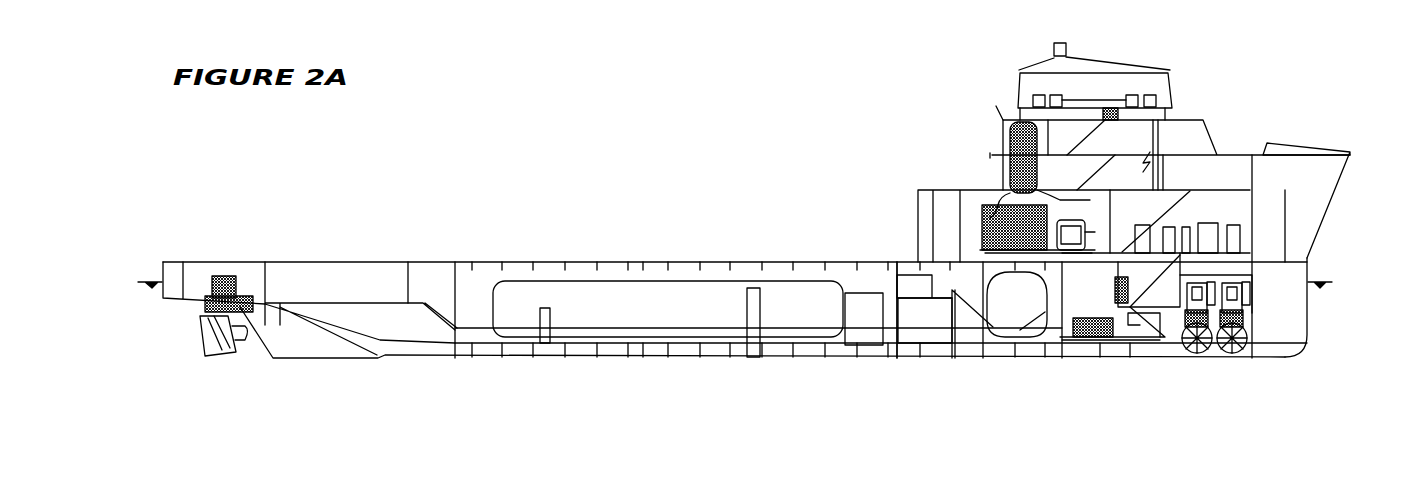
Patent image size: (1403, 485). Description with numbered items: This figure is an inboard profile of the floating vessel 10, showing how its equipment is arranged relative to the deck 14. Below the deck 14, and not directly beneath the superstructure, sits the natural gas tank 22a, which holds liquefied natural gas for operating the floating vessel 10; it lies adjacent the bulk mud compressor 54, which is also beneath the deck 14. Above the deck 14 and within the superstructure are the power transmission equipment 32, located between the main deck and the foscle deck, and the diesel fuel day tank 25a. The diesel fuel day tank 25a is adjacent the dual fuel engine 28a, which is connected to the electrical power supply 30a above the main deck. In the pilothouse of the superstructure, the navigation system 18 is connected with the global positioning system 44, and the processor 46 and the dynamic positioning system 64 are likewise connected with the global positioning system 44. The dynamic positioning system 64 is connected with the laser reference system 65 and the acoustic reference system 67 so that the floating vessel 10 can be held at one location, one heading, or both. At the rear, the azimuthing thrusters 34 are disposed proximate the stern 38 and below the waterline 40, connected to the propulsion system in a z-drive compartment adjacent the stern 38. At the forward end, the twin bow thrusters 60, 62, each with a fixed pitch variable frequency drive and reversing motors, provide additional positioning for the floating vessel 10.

The floating vessel 10 is at (1316, 86).
The deck 14 is at (348, 262).
The navigation system 18 is at (1150, 94).
The natural gas tank 22a is at (683, 280).
The diesel fuel day tank 25a is at (932, 217).
The dual fuel engine 28a is at (982, 222).
The electrical power supply 30a is at (1085, 218).
The power transmission equipment 32 is at (1207, 222).
The azimuthing thrusters 34 is at (230, 338).
The stern 38 is at (160, 272).
The waterline 40 is at (1320, 282).
The global positioning system 44 is at (1056, 94).
The processor 46 is at (1039, 94).
The bulk mud compressor 54 is at (908, 262).
The bow thruster 60 is at (1245, 352).
The bow thruster 62 is at (1210, 352).
The dynamic positioning system 64 is at (1133, 94).
The laser reference system 65 is at (1068, 48).
The acoustic reference system 67 is at (752, 288).